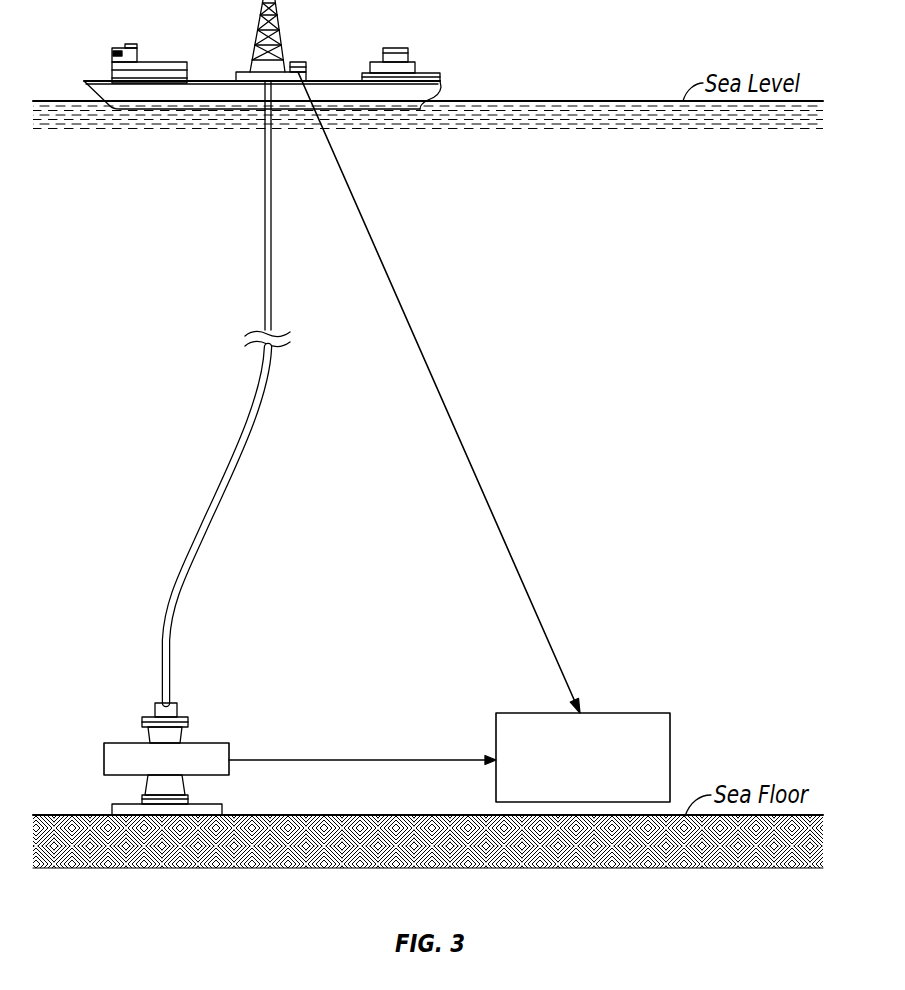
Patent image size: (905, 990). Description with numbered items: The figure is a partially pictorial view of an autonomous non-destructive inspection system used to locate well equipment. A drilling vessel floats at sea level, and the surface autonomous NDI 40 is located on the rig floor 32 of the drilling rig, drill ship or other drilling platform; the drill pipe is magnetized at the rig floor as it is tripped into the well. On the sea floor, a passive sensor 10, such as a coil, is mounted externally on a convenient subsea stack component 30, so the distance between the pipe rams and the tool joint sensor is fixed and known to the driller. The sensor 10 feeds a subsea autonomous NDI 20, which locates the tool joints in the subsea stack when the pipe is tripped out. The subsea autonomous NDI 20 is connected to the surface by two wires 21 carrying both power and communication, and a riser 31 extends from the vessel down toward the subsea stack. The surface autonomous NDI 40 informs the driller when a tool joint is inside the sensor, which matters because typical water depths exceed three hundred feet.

The passive sensor 10 is at (104, 760).
The subsea autonomous NDI 20 is at (645, 713).
The two wires 21 is at (440, 392).
The subsea stack component 30 is at (141, 722).
The riser / cable 31 is at (265, 230).
The rig floor 32 is at (243, 70).
The surface autonomous NDI 40 is at (293, 62).